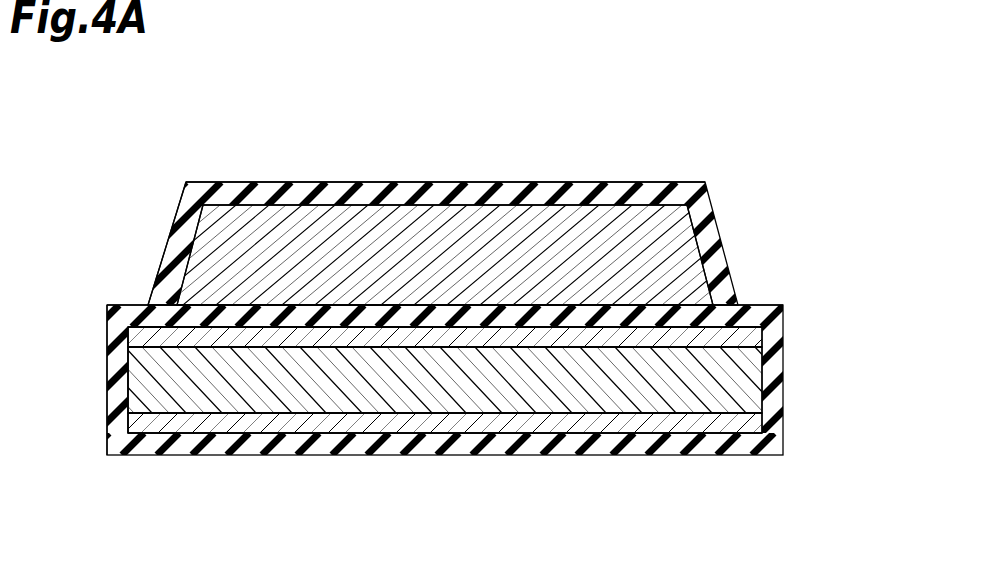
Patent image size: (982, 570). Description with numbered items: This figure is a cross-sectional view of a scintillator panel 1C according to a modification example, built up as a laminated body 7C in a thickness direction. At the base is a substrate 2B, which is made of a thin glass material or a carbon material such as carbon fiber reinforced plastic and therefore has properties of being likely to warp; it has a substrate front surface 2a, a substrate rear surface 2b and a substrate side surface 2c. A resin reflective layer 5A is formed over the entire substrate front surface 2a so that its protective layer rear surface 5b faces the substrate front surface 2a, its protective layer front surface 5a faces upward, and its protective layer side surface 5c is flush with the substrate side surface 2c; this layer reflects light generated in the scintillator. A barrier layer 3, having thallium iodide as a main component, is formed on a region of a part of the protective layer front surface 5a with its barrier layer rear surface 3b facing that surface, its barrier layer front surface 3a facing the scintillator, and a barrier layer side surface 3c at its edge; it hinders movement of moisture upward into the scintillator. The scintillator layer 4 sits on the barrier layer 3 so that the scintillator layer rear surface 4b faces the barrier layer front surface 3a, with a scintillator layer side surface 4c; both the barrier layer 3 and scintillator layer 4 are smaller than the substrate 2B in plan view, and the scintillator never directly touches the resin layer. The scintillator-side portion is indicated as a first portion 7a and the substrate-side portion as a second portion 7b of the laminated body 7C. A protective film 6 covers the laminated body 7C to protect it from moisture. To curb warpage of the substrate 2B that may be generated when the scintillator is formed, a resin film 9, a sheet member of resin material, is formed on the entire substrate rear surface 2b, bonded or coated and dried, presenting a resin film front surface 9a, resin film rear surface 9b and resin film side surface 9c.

The scintillator panel 1C is at (480, 92).
The laminated body 7C is at (858, 170).
The scintillator layer 4 is at (706, 244).
The first portion 7a is at (303, 203).
The scintillator layer rear surface 4b is at (410, 318).
The scintillator layer side surface 4c is at (190, 240).
The protective film 6 is at (653, 180).
The barrier layer 3 is at (731, 313).
The barrier layer front surface 3a is at (603, 305).
The barrier layer rear surface 3b is at (530, 330).
The barrier layer side surface 3c is at (155, 313).
The resin reflective layer 5A is at (763, 337).
The protective layer front surface 5a is at (413, 330).
The protective layer rear surface 5b is at (445, 350).
The protective layer side surface 5c is at (128, 340).
The substrate 2B is at (763, 388).
The substrate front surface 2a is at (305, 347).
The substrate rear surface 2b is at (445, 470).
The second portion 7b is at (230, 412).
The substrate side surface 2c is at (128, 387).
The resin film 9 is at (763, 425).
The resin film front surface 9a is at (580, 412).
The resin film rear surface 9b is at (640, 433).
The resin film side surface 9c is at (128, 426).